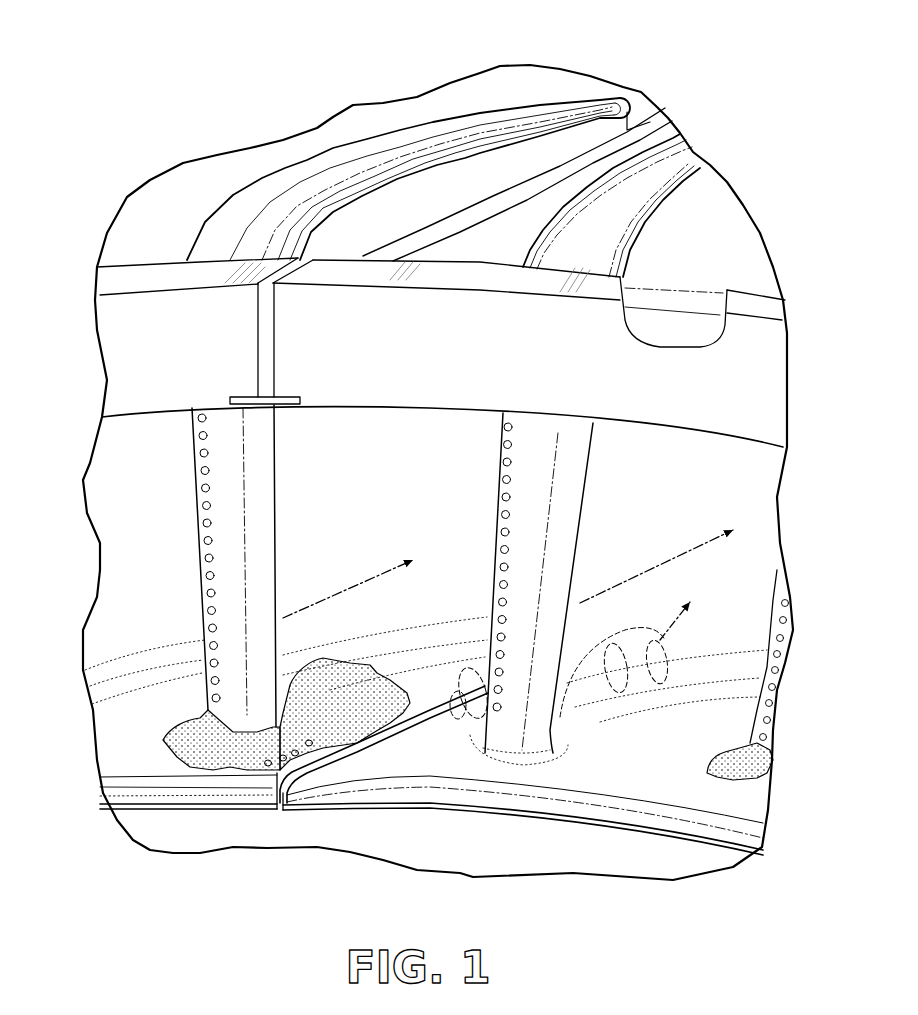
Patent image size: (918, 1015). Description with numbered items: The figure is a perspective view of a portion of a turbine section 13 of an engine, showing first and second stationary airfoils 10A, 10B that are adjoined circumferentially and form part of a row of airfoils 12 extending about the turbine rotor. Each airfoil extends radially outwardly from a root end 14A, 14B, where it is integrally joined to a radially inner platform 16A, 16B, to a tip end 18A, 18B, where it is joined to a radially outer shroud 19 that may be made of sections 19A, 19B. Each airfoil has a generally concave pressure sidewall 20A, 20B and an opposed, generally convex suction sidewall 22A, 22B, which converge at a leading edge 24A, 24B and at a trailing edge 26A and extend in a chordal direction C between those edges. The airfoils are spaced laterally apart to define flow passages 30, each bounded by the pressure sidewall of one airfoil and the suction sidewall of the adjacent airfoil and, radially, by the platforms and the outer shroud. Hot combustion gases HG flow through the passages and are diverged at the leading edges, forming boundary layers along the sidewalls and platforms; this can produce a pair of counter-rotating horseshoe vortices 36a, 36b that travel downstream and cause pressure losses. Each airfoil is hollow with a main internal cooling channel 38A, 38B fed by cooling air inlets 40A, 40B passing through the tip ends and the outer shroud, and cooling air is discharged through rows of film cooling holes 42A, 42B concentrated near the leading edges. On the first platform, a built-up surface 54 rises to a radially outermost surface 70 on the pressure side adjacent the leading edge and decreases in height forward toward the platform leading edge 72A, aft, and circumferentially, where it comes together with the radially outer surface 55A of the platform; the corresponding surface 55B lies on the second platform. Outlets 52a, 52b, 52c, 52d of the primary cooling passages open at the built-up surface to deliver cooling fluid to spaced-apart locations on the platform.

The turbine section 13 is at (768, 157).
The row of airfoils 12 is at (780, 543).
The radially outer shroud 19 is at (107, 325).
The outer shroud section 19A is at (103, 280).
The outer shroud section 19B is at (785, 355).
The pressure sidewall 20A is at (313, 427).
The pressure sidewall 20B is at (627, 443).
The flow passages 30 is at (157, 430).
The tip end 18A is at (273, 167).
The tip end 18B is at (662, 235).
The suction sidewall 22A is at (240, 197).
The suction sidewall 22B is at (662, 143).
The cooling air inlet 40A is at (327, 167).
The cooling air inlet 40B is at (632, 192).
The chordal direction C is at (423, 140).
The trailing edge 26A is at (637, 112).
The main internal cooling channel 38A is at (263, 240).
The main internal cooling channel 38B is at (588, 258).
The leading edge 24A is at (223, 420).
The leading edge 24B is at (533, 433).
The first airfoil 10A is at (190, 447).
The second airfoil 10B is at (493, 493).
The film cooling holes 42A is at (207, 585).
The film cooling holes 42B is at (500, 593).
The hot combustion gases HG is at (353, 580).
The root end 14A is at (400, 668).
The root end 14B is at (733, 668).
The radially outer surface of the platform 55A is at (127, 735).
The second floor surface 55B is at (617, 783).
The horseshoe vortex 36a is at (453, 722).
The horseshoe vortex 36b is at (640, 612).
The radially outermost surface 70 is at (280, 728).
The leading edge of the platform 72A is at (240, 760).
The built-up surface 54 is at (358, 703).
The outlet 52a is at (268, 766).
The outlet 52b is at (283, 762).
The outlet 52c is at (296, 757).
The outlet 52d is at (310, 747).
The platform 16A is at (123, 790).
The platform 16B is at (697, 817).